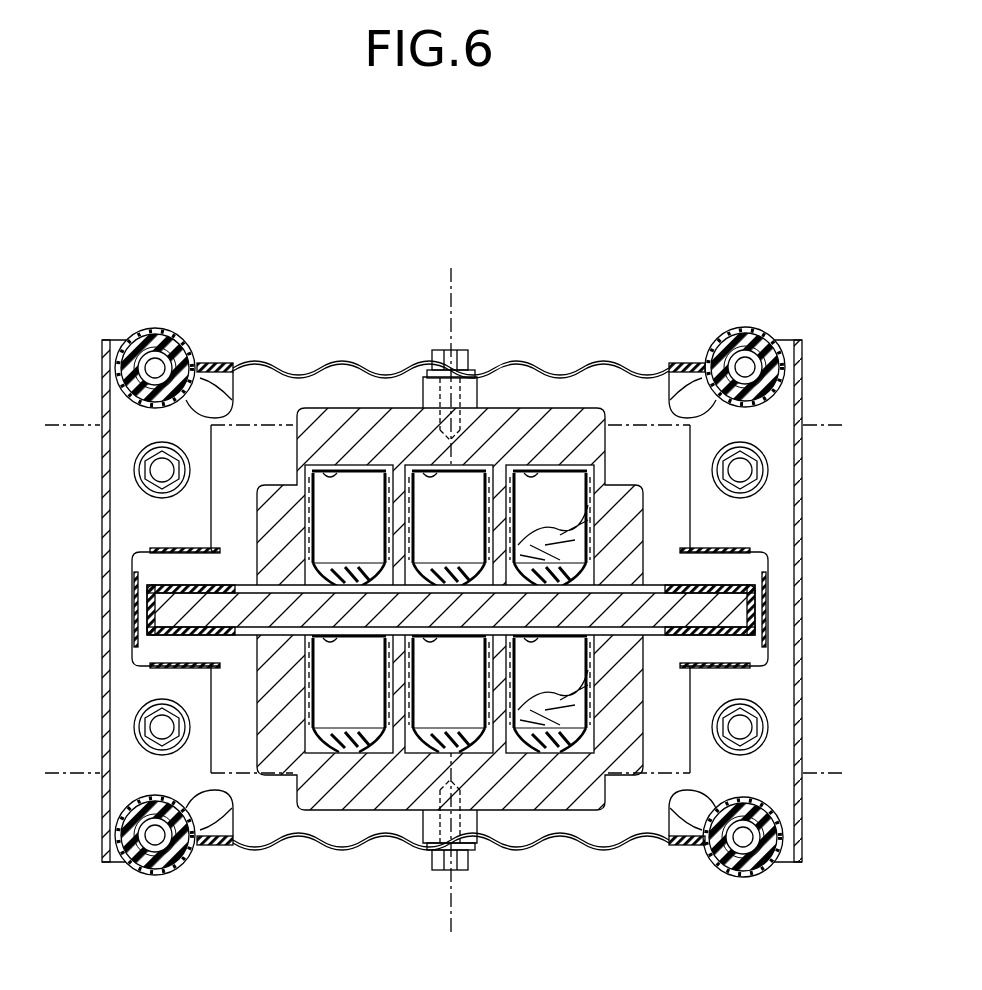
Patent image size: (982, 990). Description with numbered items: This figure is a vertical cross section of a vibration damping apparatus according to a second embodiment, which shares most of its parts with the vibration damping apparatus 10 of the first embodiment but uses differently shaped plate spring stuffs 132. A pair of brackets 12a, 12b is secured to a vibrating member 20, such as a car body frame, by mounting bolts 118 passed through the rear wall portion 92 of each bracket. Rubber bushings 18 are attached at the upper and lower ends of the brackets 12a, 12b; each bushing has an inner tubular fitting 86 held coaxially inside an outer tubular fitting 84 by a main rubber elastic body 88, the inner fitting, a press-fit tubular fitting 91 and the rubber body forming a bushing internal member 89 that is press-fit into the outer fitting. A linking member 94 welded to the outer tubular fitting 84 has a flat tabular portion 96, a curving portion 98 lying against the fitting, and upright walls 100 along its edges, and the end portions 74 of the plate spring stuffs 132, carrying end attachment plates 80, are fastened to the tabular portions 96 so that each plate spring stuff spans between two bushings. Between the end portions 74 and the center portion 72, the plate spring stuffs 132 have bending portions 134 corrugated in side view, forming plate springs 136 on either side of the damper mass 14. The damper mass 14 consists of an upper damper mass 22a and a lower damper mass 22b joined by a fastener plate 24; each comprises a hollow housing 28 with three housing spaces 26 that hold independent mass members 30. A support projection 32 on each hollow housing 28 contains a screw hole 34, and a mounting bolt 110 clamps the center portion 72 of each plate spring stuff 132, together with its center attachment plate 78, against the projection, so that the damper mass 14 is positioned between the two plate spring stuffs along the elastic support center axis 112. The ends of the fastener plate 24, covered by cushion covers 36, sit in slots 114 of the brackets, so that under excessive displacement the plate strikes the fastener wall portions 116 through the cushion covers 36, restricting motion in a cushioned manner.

The vibration damping apparatus 10 is at (678, 232).
The bracket 12a is at (812, 392).
The bracket 12b is at (93, 416).
The damper mass 14 is at (527, 388).
The rubber bushing 18 is at (152, 320).
The vibrating member 20 is at (828, 460).
The upper damper mass 22a is at (549, 396).
The lower damper mass 22b is at (549, 825).
The fastener plate 24 is at (653, 602).
The housing space 26 is at (318, 468).
The hollow housing 28 is at (317, 427).
The mass member 30 is at (352, 455).
The support projection 32 is at (470, 395).
The screw hole 34 is at (440, 392).
The cushion cover 36 is at (200, 584).
The center portion 72 is at (430, 372).
The end portion 74 is at (243, 372).
The center attachment plate 78 is at (452, 380).
The end attachment plate 80 is at (203, 365).
The outer tubular fitting 84 is at (148, 327).
The inner tubular fitting 86 is at (123, 345).
The main rubber elastic body 88 is at (167, 342).
The bushing internal member 89 is at (108, 344).
The press-fit tubular fitting 91 is at (123, 372).
The rear wall portion 92 is at (126, 517).
The linking member 94 is at (244, 388).
The tabular portion 96 is at (226, 365).
The curving portion 98 is at (212, 385).
The upright wall 100 is at (205, 410).
The mounting bolt 110 is at (435, 355).
The elastic support center axis 112 is at (447, 338).
The slot 114 is at (130, 561).
The fastener wall portion 116 is at (210, 549).
The mounting bolt 118 is at (160, 468).
The plate spring stuff 132 is at (512, 332).
The bending portion 134 is at (362, 367).
The plate spring 136 is at (334, 354).